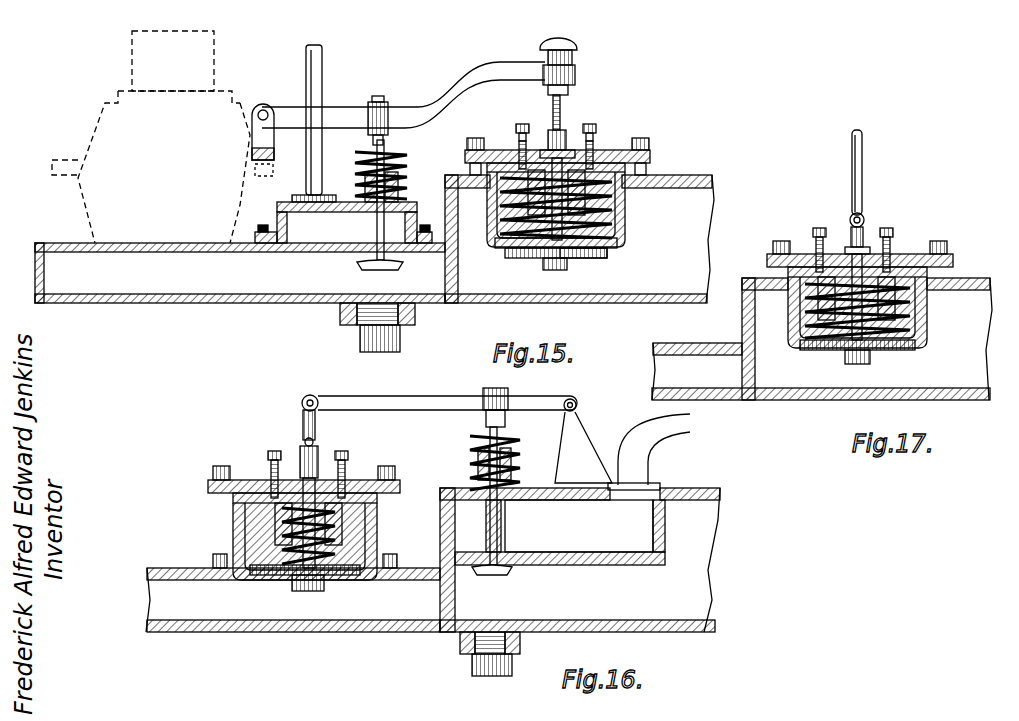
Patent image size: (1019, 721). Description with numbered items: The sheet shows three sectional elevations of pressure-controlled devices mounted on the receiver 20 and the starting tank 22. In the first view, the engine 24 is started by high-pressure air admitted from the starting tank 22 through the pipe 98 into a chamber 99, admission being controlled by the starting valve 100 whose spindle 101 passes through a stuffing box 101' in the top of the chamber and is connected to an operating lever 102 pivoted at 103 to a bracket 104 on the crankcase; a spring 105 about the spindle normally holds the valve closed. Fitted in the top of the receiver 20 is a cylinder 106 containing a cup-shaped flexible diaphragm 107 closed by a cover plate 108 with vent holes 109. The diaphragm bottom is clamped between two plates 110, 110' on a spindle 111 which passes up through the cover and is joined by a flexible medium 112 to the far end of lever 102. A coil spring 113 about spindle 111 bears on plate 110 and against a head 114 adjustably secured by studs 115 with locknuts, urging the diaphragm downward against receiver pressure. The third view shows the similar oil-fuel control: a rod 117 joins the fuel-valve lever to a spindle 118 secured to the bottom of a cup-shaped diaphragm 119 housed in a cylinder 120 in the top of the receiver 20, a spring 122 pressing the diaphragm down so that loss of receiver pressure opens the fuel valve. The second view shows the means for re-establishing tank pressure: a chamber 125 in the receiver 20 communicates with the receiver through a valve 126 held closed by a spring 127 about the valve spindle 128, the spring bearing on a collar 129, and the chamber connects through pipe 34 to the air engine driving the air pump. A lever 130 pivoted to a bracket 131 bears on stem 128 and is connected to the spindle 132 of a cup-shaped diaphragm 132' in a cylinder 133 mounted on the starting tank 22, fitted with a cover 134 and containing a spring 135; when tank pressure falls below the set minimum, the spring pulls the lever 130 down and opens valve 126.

In FIG. 15, the receiver 20 is at (527, 263).
In FIG. 17, the receiver 20 is at (822, 339).
In FIG. 16, the receiver 20 is at (580, 582).
In FIG. 15, the starting tank 22 is at (240, 273).
In FIG. 17, the starting tank 22 is at (697, 371).
In FIG. 16, the starting tank 22 is at (293, 600).
In FIG. 15, the engine 24 is at (130, 58).
In FIG. 16, the pipe 34 is at (657, 460).
In FIG. 15, the pipe 98 is at (323, 70).
In FIG. 15, the chamber 99 is at (280, 218).
In FIG. 15, the starting valve 100 is at (372, 268).
In FIG. 15, the spindle 101 is at (363, 120).
In FIG. 15, the stuffing box 101' is at (363, 187).
In FIG. 15, the operating lever 102 is at (447, 92).
In FIG. 15, the pivot 103 is at (263, 104).
In FIG. 15, the bracket 104 is at (258, 128).
In FIG. 15, the spring 105 is at (408, 166).
In FIG. 15, the cylinder 106 is at (625, 245).
In FIG. 15, the cup-shaped flexible diaphragm 107 is at (612, 252).
In FIG. 15, the cover plate 108 is at (650, 153).
In FIG. 15, the vent holes 109 is at (500, 150).
In FIG. 15, the plate 110 is at (550, 264).
In FIG. 15, the plate 110' is at (586, 264).
In FIG. 15, the spindle 111 is at (558, 132).
In FIG. 15, the flexible medium 112 is at (558, 92).
In FIG. 15, the coil spring 113 is at (622, 223).
In FIG. 15, the head 114 is at (620, 205).
In FIG. 15, the studs 115 is at (522, 126).
In FIG. 17, the rod 117 is at (863, 184).
In FIG. 17, the spindle 118 is at (866, 223).
In FIG. 17, the cup-shaped flexible diaphragm 119 is at (912, 352).
In FIG. 17, the cylinder 120 is at (916, 346).
In FIG. 17, the spring 122 is at (925, 325).
In FIG. 16, the chamber 125 is at (560, 532).
In FIG. 16, the valve 126 is at (512, 573).
In FIG. 16, the spring 127 is at (470, 470).
In FIG. 16, the valve spindle 128 is at (512, 472).
In FIG. 16, the collar 129 is at (508, 432).
In FIG. 16, the lever 130 is at (406, 404).
In FIG. 16, the bracket 131 is at (578, 462).
In FIG. 16, the spindle 132 is at (293, 489).
In FIG. 16, the cup-shaped diaphragm 132' is at (288, 584).
In FIG. 16, the cylinder 133 is at (232, 483).
In FIG. 16, the cover 134 is at (360, 480).
In FIG. 16, the spring 135 is at (340, 540).